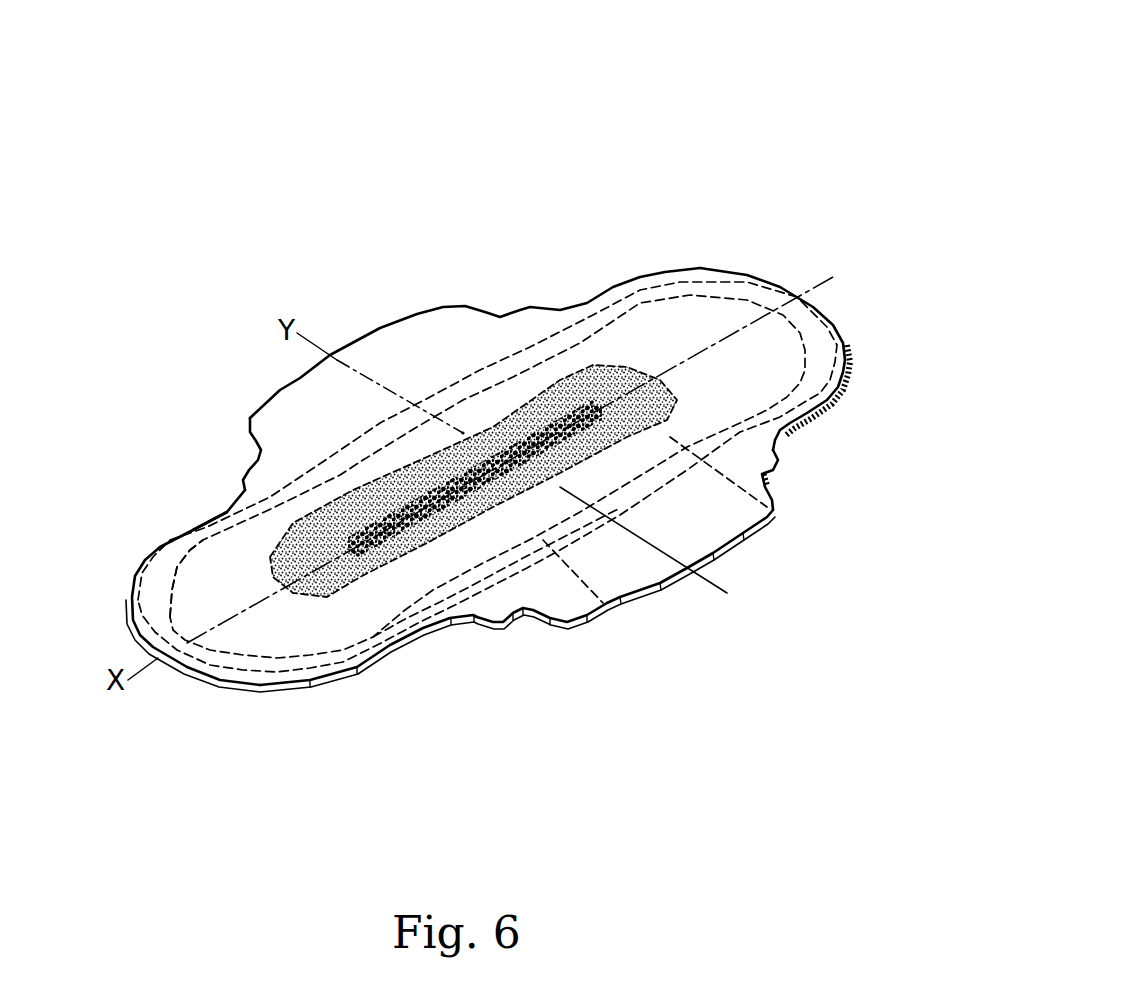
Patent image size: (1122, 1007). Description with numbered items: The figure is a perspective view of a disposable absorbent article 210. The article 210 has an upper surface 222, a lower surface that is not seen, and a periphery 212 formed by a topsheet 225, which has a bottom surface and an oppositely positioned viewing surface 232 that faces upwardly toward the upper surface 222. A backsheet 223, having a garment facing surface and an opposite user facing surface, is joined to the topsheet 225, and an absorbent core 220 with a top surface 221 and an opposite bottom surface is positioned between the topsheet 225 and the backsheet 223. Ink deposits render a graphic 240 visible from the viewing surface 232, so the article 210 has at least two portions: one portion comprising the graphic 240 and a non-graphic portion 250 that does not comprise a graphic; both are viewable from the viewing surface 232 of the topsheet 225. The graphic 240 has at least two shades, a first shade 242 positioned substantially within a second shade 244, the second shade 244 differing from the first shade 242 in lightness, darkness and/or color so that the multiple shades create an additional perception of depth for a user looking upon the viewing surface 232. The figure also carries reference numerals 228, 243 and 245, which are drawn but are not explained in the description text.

The absorbent article 210 is at (736, 126).
The periphery 212 is at (614, 284).
The absorbent core 220 is at (688, 290).
The top surface 221 is at (803, 326).
The upper surface 222 is at (280, 641).
The backsheet 223 is at (407, 632).
The topsheet 225 is at (225, 560).
The side flap 228 is at (250, 421).
The viewing surface 232 is at (347, 633).
The graphic 240 is at (491, 398).
The first shade 242 is at (408, 488).
The side flap 243 is at (775, 512).
The second shade 244 is at (293, 560).
The adhesive strip 245 is at (603, 603).
The non-graphic portion 250 is at (207, 600).